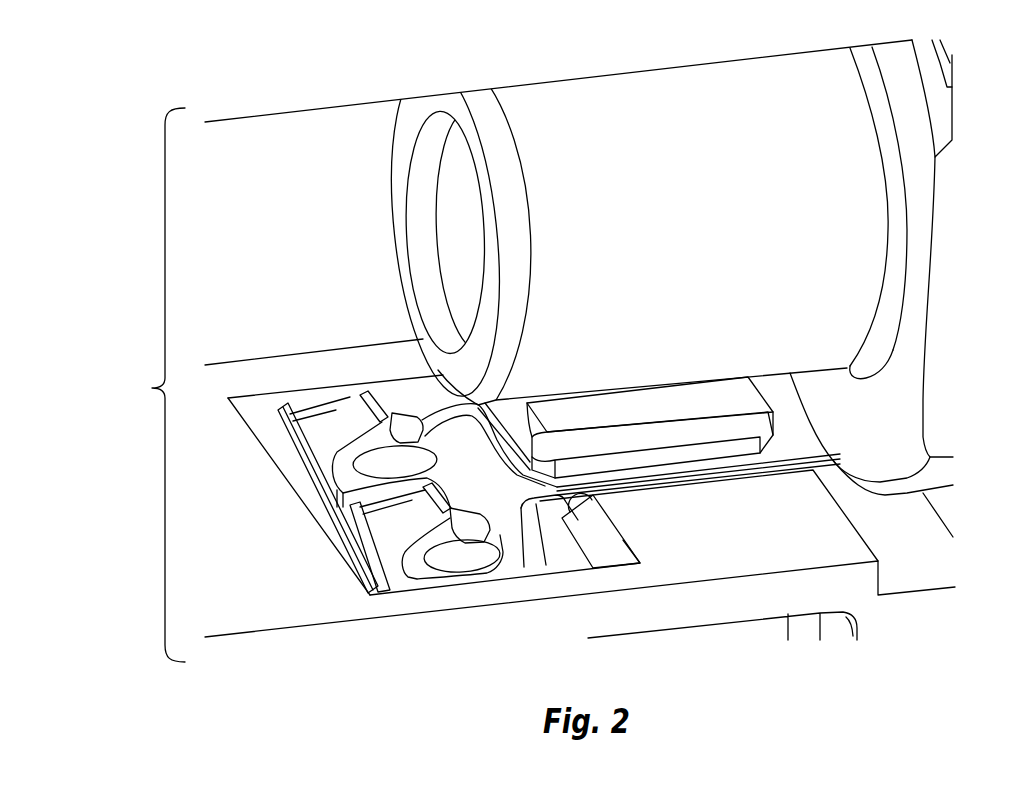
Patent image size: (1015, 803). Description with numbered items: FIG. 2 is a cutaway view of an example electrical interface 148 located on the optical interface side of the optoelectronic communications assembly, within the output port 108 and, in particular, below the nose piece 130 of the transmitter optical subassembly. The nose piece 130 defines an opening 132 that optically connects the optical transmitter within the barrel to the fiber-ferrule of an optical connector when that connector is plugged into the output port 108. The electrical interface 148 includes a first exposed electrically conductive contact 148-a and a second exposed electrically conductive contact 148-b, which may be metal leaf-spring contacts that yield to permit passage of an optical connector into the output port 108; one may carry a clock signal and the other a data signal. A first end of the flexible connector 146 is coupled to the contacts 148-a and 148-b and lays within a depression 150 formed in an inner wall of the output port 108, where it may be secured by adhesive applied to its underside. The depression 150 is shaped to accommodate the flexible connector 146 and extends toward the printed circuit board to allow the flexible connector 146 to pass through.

The output port 108 is at (527, 351).
The nose piece 130 is at (703, 88).
The opening 132 is at (455, 227).
The flexible connector 146 is at (838, 482).
The electrical interface 148 is at (306, 360).
The first exposed electrically conductive contact 148-a is at (340, 430).
The second exposed electrically conductive contact 148-b is at (370, 527).
The depression 150 is at (582, 533).